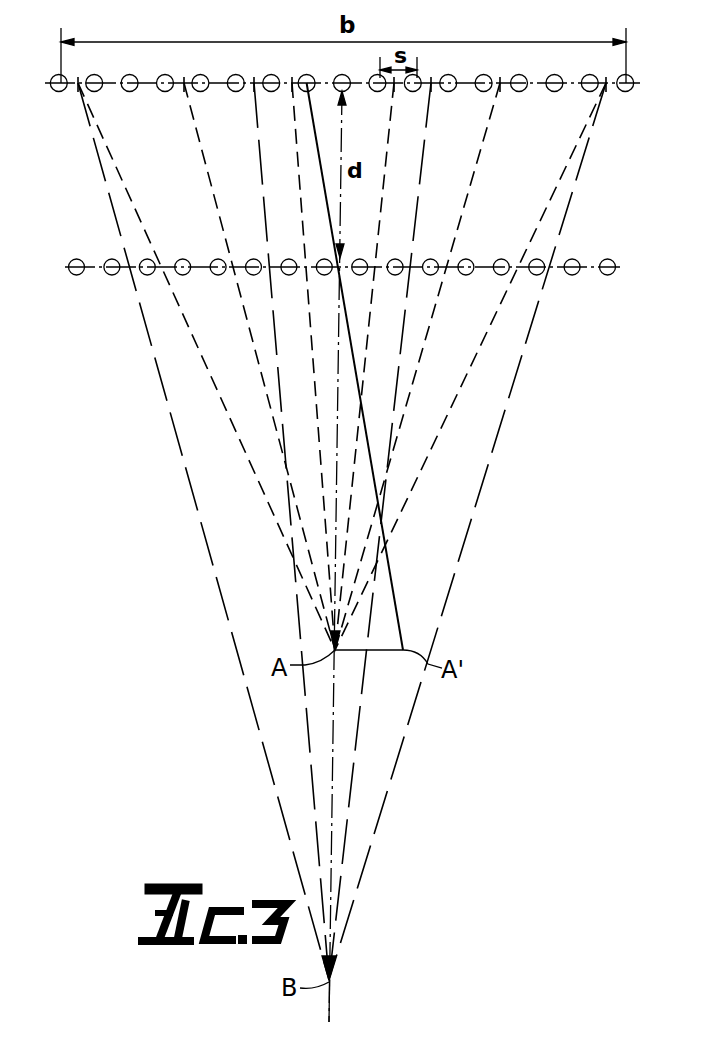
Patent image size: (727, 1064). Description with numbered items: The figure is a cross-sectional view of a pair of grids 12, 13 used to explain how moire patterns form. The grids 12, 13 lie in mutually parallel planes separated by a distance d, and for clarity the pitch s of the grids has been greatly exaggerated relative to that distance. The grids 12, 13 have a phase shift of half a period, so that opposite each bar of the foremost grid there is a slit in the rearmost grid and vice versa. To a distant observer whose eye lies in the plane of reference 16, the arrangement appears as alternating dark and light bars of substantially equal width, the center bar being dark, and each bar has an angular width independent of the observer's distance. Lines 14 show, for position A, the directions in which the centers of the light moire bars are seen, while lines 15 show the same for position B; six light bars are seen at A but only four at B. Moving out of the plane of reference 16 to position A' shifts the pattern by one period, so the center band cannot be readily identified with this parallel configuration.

The grid 12 is at (570, 83).
The grid 13 is at (582, 272).
The lines 14 is at (253, 348).
The lines 15 is at (308, 731).
The plane of reference 16 is at (330, 838).